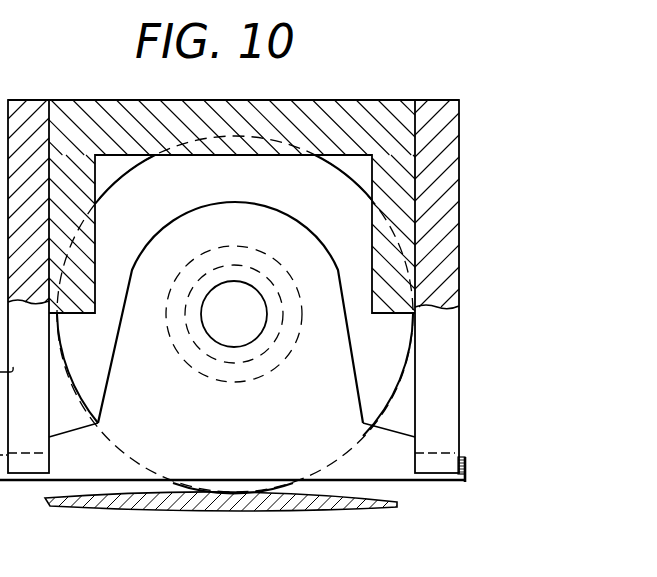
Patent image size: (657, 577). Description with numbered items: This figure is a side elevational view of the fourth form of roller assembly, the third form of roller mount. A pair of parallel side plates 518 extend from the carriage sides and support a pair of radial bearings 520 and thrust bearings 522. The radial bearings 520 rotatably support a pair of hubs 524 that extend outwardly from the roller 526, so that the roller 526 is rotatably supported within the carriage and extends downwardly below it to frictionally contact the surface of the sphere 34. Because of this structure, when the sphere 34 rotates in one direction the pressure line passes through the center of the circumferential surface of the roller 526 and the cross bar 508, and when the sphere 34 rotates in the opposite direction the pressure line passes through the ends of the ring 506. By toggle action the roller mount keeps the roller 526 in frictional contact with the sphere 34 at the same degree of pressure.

The retaining ring 506 is at (440, 340).
The cross bar 508 is at (147, 154).
The side plates 518 is at (260, 430).
The radial bearings 520 is at (190, 330).
The thrust bearings 522 is at (168, 322).
The hubs 524 is at (244, 332).
The roller 526 is at (238, 490).
The sphere 34 is at (393, 512).